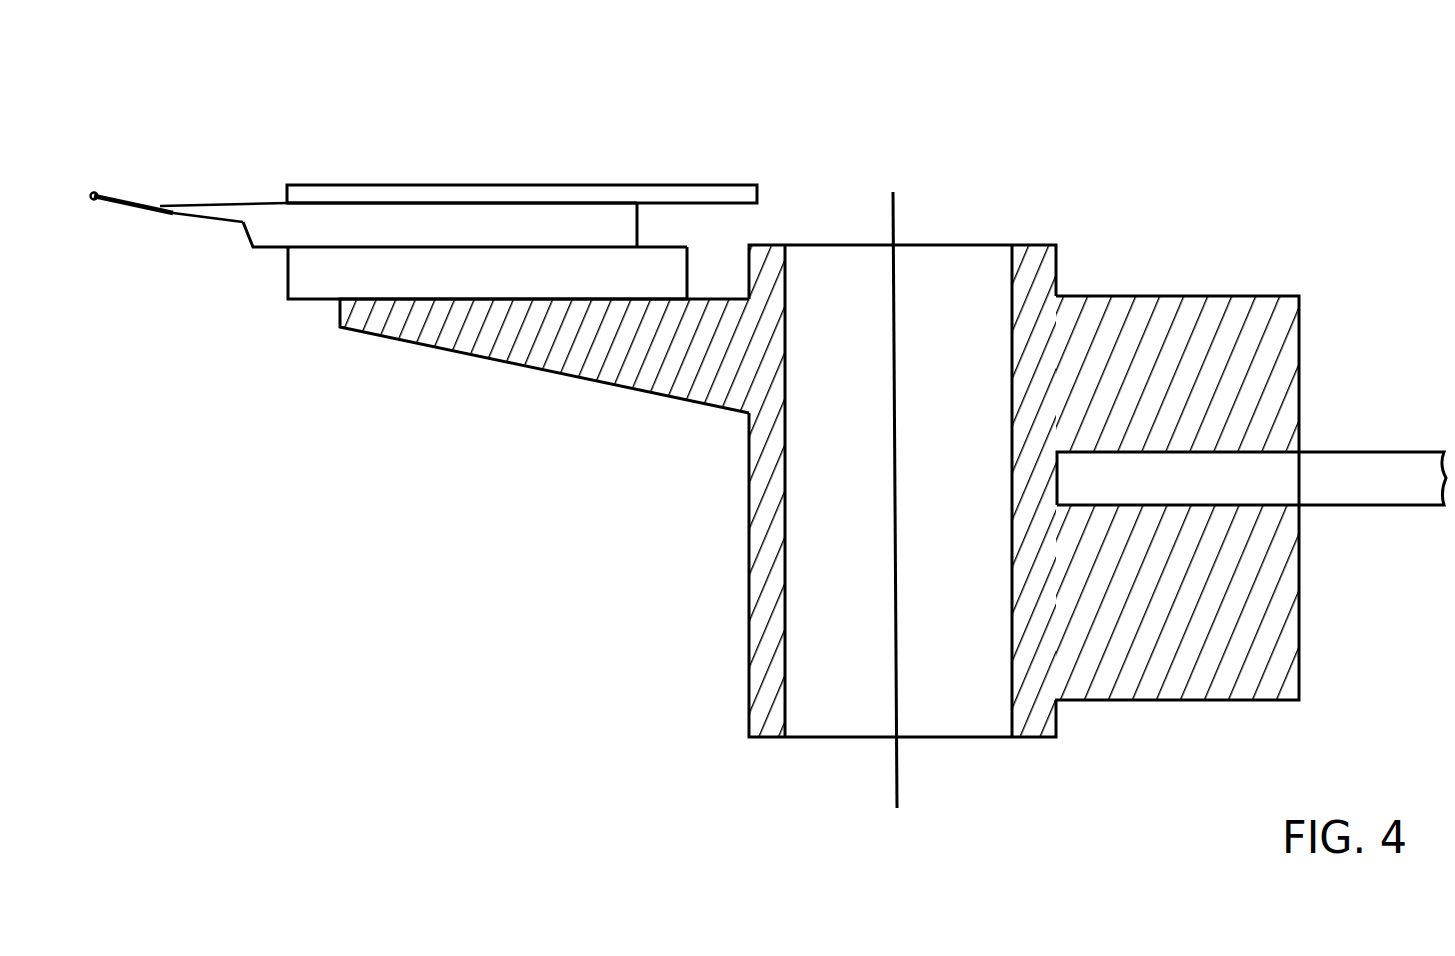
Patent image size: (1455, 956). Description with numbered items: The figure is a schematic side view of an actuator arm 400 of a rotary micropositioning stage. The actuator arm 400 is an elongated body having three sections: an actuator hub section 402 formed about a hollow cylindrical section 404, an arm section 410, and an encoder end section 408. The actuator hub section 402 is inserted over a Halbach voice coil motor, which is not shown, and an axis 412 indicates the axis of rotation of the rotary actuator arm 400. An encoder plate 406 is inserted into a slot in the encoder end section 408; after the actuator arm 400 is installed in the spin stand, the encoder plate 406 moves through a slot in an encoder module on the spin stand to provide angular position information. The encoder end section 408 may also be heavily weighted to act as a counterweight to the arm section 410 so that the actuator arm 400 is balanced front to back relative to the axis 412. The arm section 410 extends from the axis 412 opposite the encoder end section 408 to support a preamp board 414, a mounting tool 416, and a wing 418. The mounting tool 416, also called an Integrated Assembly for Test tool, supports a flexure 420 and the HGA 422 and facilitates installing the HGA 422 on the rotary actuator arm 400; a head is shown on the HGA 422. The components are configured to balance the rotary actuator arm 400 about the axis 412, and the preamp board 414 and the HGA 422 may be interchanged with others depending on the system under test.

The actuator arm 400 is at (572, 693).
The actuator hub section 402 is at (748, 547).
The hollow cylindrical section 404 is at (845, 701).
The encoder plate 406 is at (1349, 451).
The encoder end section 408 is at (1193, 200).
The arm section 410 is at (535, 423).
The axis 412 is at (913, 162).
The preamp board 414 is at (301, 299).
The mounting tool 416 is at (268, 249).
The wing 418 is at (553, 185).
The flexure 420 is at (160, 205).
The HGA 422 is at (96, 192).